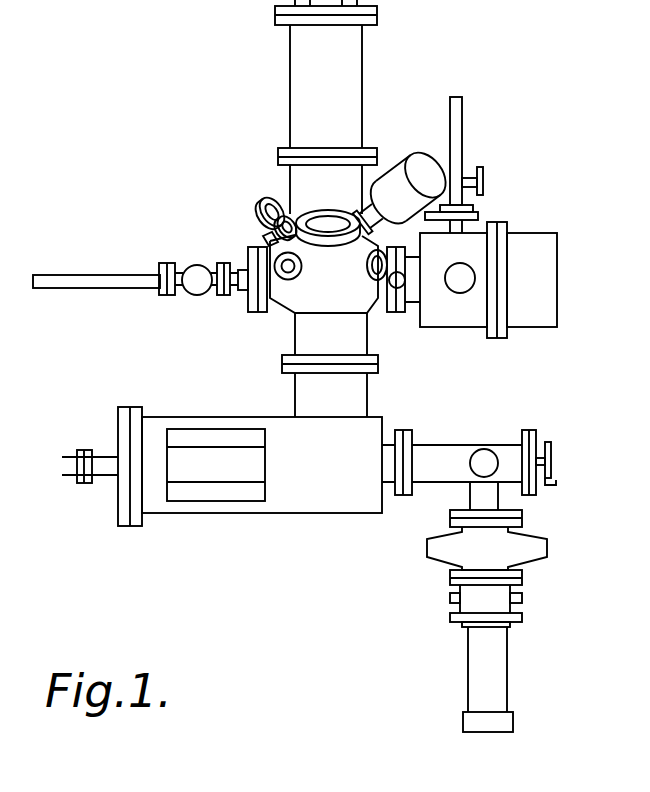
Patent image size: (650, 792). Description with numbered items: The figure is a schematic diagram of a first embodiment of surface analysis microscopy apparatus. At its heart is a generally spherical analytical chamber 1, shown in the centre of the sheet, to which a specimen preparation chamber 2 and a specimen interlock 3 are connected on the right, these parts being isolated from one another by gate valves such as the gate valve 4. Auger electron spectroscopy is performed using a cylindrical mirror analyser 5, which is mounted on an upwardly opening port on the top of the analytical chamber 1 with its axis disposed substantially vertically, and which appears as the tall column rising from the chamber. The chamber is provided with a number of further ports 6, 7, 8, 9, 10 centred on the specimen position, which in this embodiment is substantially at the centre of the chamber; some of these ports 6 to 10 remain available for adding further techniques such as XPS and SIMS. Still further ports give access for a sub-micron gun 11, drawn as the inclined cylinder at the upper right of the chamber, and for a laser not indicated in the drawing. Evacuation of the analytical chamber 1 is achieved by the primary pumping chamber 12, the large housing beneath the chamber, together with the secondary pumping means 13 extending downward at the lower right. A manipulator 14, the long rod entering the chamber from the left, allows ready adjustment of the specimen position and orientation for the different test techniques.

The analytical chamber 1 is at (300, 303).
The specimen preparation chamber 2 is at (452, 313).
The specimen interlock 3 is at (457, 130).
The gate valve 4 is at (470, 180).
The cylindrical mirror analyser 5 is at (310, 80).
The port 6 is at (252, 260).
The port 7 is at (291, 266).
The port 8 is at (262, 216).
The port 9 is at (330, 222).
The port 10 is at (376, 282).
The sub-micron gun 11 is at (398, 178).
The primary pumping chamber 12 is at (332, 495).
The secondary pumping means 13 is at (490, 664).
The manipulator 14 is at (58, 277).